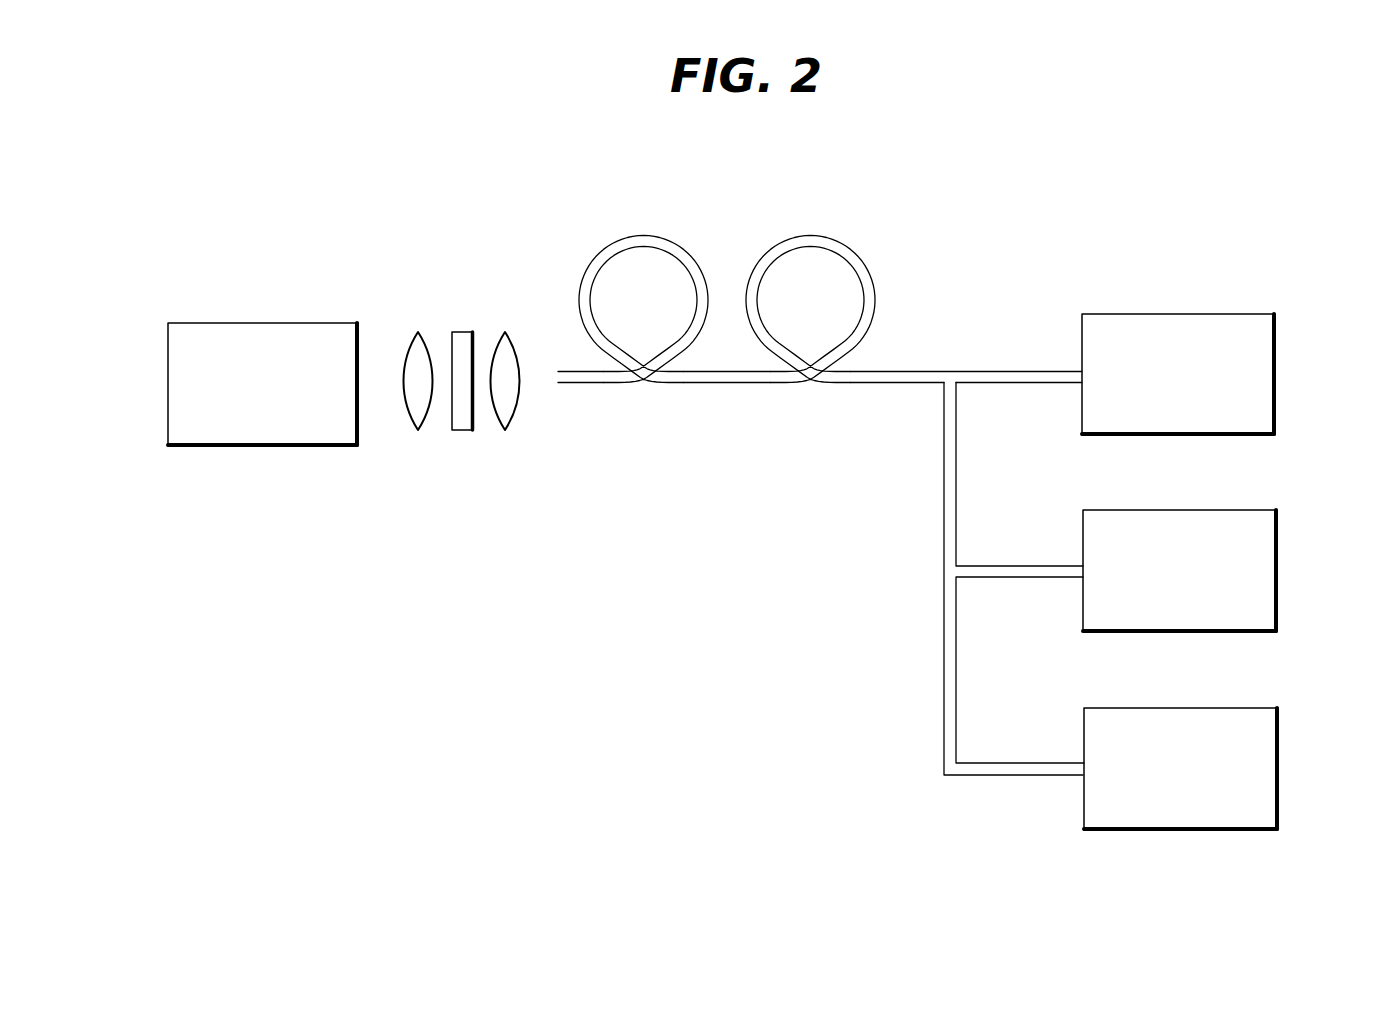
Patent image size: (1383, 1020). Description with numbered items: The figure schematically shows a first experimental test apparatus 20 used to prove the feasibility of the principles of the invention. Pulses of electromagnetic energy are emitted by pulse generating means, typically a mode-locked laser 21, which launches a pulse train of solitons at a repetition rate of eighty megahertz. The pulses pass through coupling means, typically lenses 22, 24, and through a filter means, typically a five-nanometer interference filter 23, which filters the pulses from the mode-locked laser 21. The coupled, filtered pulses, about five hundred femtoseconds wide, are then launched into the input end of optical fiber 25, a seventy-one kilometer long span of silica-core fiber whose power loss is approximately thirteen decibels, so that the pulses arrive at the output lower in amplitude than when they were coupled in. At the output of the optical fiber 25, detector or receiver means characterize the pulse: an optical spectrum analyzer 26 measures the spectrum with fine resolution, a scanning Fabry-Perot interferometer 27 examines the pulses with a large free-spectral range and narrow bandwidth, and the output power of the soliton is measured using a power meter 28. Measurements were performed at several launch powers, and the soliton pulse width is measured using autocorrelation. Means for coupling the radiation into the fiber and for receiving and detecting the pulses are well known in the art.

The measurement system 20 is at (452, 672).
The mode-locked laser 21 is at (168, 372).
The lens 22 is at (420, 430).
The interference filter 23 is at (460, 430).
The lens 24 is at (507, 430).
The optical fiber 25 is at (718, 385).
The optical spectrum analyzer 26 is at (1277, 378).
The scanning Fabry-Perot interferometer 27 is at (1278, 572).
The power meter (PM) 28 is at (1278, 755).